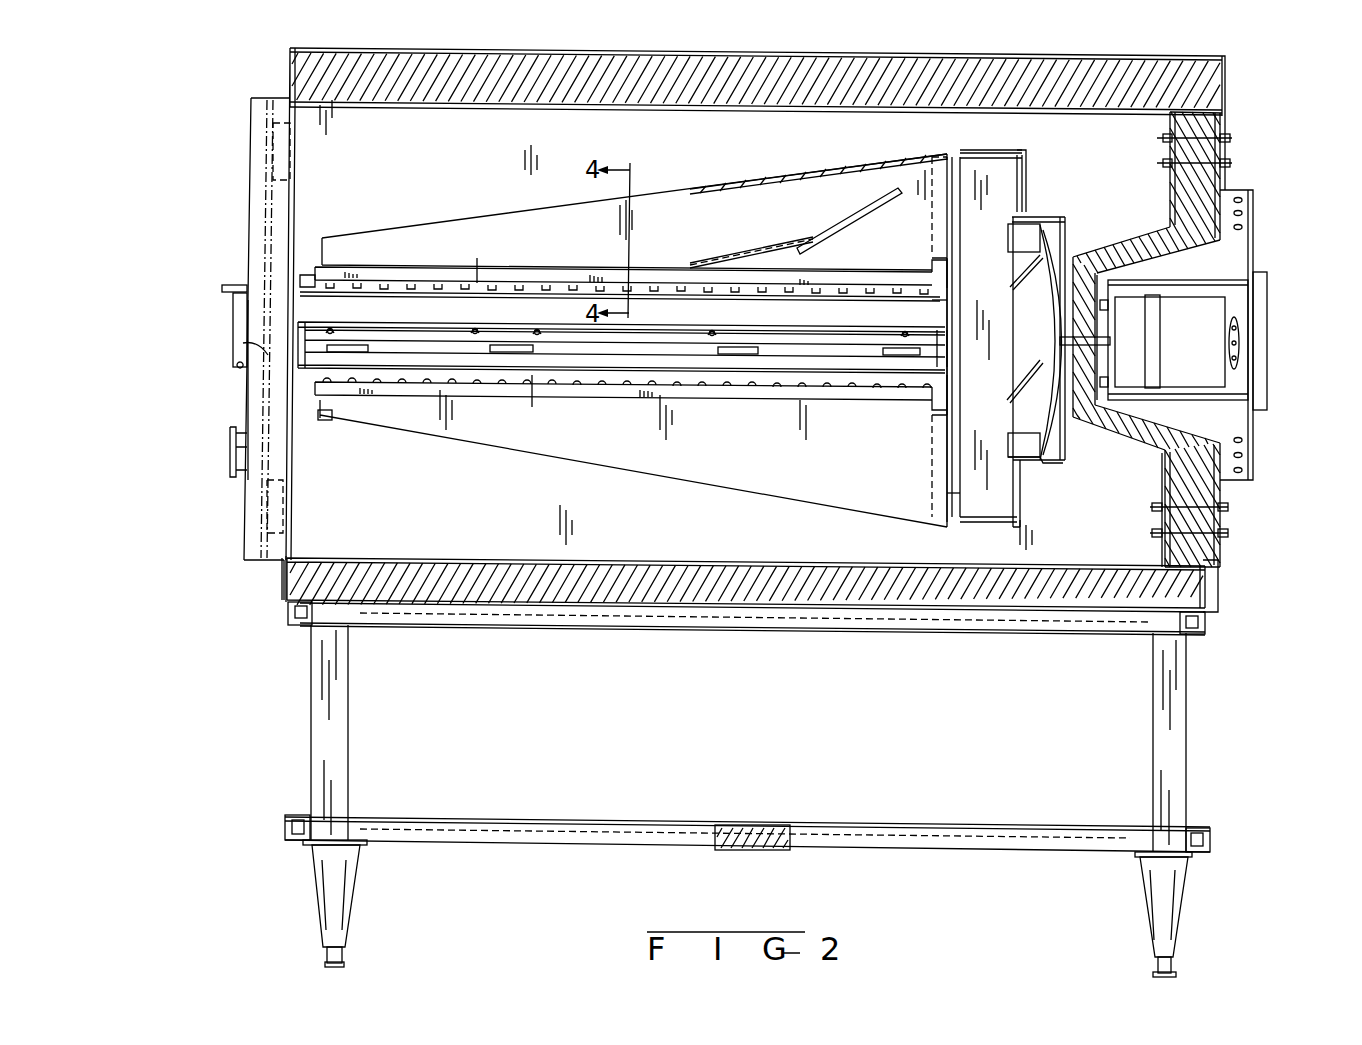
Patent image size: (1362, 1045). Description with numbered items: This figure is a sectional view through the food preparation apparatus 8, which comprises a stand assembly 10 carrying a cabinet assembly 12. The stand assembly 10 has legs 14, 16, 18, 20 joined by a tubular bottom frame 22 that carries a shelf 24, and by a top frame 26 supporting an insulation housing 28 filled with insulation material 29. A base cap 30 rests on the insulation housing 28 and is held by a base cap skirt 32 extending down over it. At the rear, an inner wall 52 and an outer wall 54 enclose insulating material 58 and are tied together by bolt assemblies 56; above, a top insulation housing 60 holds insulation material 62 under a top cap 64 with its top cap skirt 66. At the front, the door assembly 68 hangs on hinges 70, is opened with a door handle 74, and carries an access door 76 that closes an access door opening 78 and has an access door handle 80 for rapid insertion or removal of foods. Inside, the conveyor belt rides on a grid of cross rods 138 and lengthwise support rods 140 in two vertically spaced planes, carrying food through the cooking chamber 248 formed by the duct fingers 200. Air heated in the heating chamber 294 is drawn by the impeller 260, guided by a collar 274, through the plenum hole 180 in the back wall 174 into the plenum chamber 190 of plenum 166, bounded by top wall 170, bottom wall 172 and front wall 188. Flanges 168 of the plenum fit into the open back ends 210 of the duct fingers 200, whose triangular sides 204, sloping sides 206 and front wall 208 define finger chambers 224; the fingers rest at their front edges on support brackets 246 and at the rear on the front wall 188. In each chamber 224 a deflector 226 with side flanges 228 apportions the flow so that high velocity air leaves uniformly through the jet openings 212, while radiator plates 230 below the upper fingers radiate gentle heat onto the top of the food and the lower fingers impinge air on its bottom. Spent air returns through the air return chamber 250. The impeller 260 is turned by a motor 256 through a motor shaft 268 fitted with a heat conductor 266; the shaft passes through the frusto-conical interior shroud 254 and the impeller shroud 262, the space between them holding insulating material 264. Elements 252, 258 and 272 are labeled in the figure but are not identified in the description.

The food preparation apparatus 8 is at (246, 625).
The stand assembly 10 is at (256, 830).
The cabinet assembly 12 is at (203, 399).
The leg 14 is at (385, 732).
The leg 16 is at (1121, 742).
The leg 18 is at (348, 686).
The leg 20 is at (1153, 673).
The bottom frame 22 is at (1211, 836).
The shelf 24 is at (680, 818).
The top frame 26 is at (1207, 622).
The insulation housing 28 is at (278, 592).
The insulation material 29 is at (1190, 592).
The base cap 30 is at (645, 560).
The base cap skirt 32 is at (282, 567).
The inner wall 52 is at (1215, 560).
The outer wall 54 is at (1222, 540).
The bolt assemblies 56 is at (1232, 163).
The insulating material 58 is at (1207, 183).
The top insulation housing 60 is at (1226, 84).
The insulation material 62 is at (1205, 92).
The top cap 64 is at (566, 68).
The top cap skirt 66 is at (290, 58).
The door assembly 68 is at (218, 216).
The hinges 70 is at (268, 150).
The door handle 74 is at (230, 453).
The access door 76 is at (233, 330).
The access door opening 78 is at (240, 342).
The access door handle 80 is at (222, 288).
The cross rods 138 is at (647, 338).
The support rods 140 is at (333, 327).
The plenum 166 is at (1032, 164).
The flanges 168 is at (933, 172).
The top wall 170 is at (973, 155).
The bottom wall 172 is at (980, 523).
The back wall 174 is at (1020, 500).
The plenum hole 180 is at (1013, 224).
The front wall 188 is at (960, 493).
The plenum chamber 190 is at (1014, 338).
The duct fingers 200 is at (633, 332).
The triangular sides 204 is at (690, 193).
The sloping sides 206 is at (817, 170).
The front wall 208 is at (312, 283).
The open back end 210 is at (943, 217).
The jet openings 212 is at (500, 283).
The duct finger chamber 224 is at (571, 230).
The deflectors 226 is at (752, 253).
The flanges 228 is at (790, 250).
The radiator plates 230 is at (828, 310).
The support brackets 246 is at (300, 262).
The cooking chamber 248 is at (623, 347).
The air return chamber 250 is at (386, 324).
The motor housing 252 is at (1266, 207).
The interior shroud 254 is at (1227, 263).
The motor 256 is at (1257, 360).
The vent 258 is at (1240, 332).
The impeller 260 is at (1020, 320).
The impeller shroud 262 is at (1137, 237).
The insulating material 264 is at (1127, 423).
The heat conductor 266 is at (1105, 364).
The motor shaft 268 is at (1105, 350).
The motor 272 is at (1105, 317).
The collar 274 is at (1043, 463).
The heating chamber 294 is at (1095, 542).